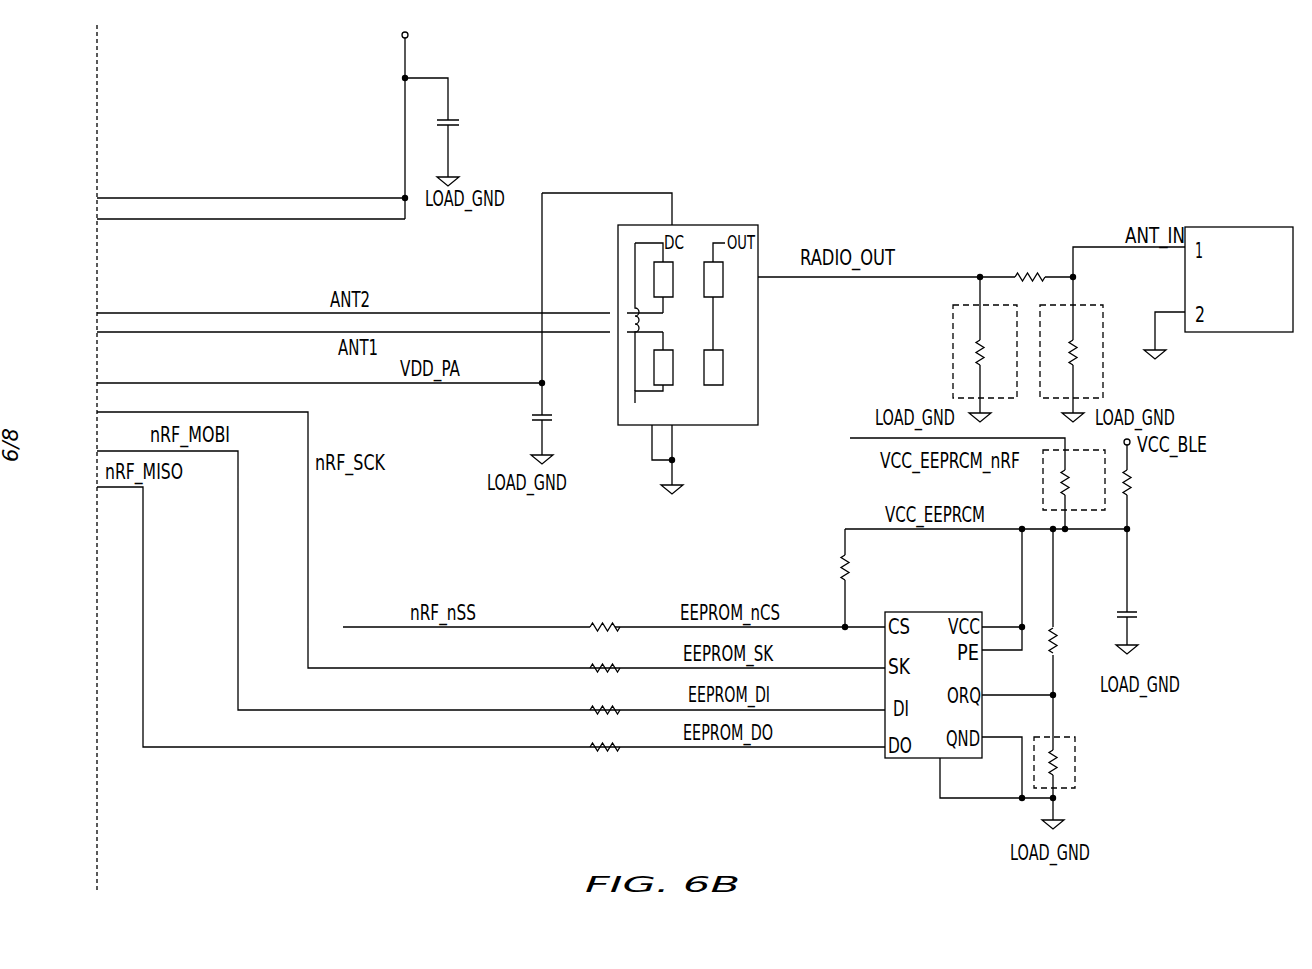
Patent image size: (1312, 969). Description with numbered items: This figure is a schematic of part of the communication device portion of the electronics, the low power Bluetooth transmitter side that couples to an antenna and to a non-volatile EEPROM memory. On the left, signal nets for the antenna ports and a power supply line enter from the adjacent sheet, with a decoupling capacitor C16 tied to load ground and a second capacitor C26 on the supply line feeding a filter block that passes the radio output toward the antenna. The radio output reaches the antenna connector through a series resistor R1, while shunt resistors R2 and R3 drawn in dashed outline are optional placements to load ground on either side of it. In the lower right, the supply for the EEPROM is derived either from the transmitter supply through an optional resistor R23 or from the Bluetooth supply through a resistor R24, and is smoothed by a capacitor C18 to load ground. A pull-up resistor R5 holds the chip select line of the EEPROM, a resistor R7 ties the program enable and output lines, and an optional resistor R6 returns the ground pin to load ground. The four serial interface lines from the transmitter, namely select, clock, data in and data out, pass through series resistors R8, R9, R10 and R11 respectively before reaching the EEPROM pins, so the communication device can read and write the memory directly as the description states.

The capacitor 1000pF 25V C16 is at (460, 132).
The capacitor 2200pF 25V C26 is at (573, 433).
The capacitor 0.1uF 6.3V C18 is at (1159, 592).
The resistor 0 ohm R1 is at (1024, 263).
The resistor 0 ohm (optional) R2 is at (985, 349).
The resistor 0 ohm (optional) R3 is at (1071, 349).
The resistor 470K R5 is at (868, 578).
The resistor 470k (optional) R6 is at (1080, 783).
The resistor 470k R7 is at (1073, 639).
The resistor 22 ohm R8 is at (607, 616).
The resistor 22 ohm R9 is at (607, 657).
The resistor 22 ohm R10 is at (606, 698).
The resistor 22 ohm R11 is at (606, 736).
The resistor 0 ohm (optional) R23 is at (1074, 480).
The resistor 0 ohm R24 is at (1146, 487).